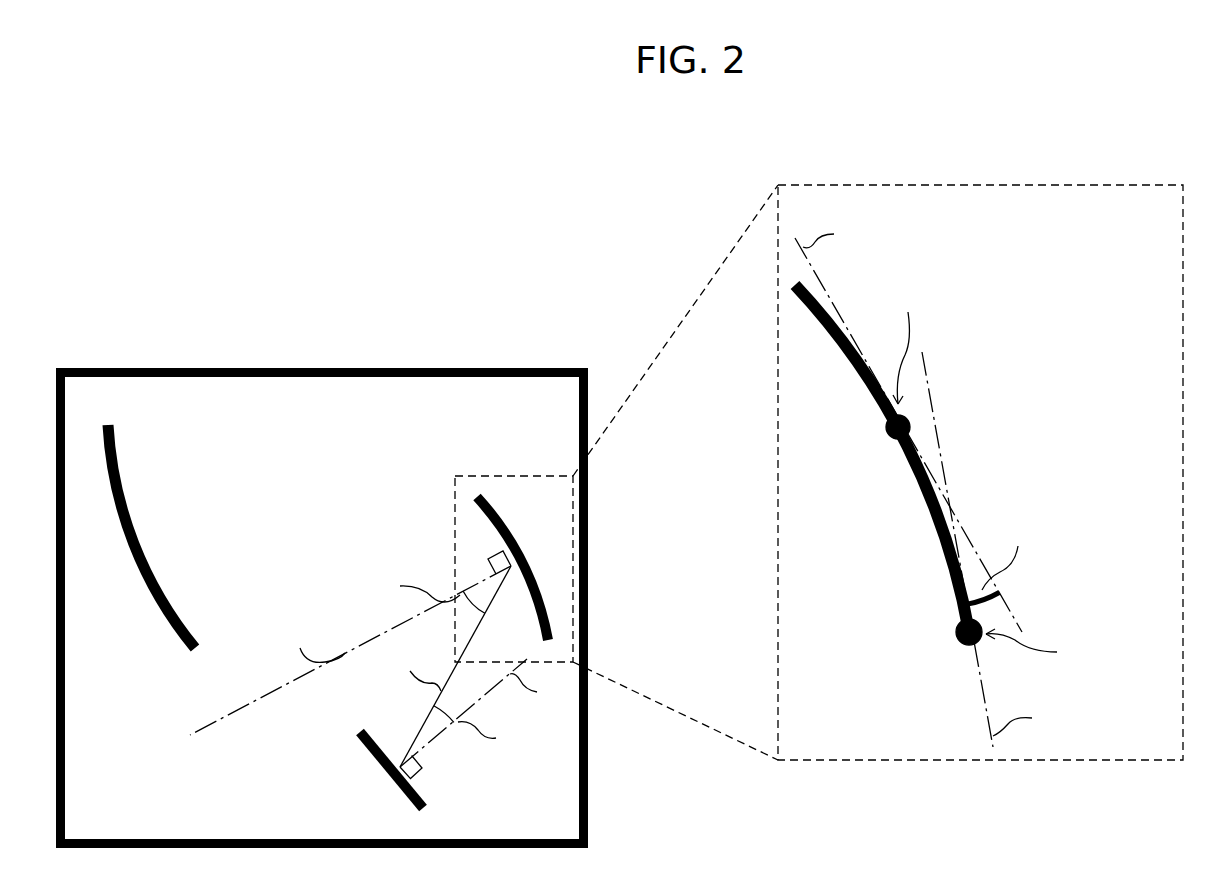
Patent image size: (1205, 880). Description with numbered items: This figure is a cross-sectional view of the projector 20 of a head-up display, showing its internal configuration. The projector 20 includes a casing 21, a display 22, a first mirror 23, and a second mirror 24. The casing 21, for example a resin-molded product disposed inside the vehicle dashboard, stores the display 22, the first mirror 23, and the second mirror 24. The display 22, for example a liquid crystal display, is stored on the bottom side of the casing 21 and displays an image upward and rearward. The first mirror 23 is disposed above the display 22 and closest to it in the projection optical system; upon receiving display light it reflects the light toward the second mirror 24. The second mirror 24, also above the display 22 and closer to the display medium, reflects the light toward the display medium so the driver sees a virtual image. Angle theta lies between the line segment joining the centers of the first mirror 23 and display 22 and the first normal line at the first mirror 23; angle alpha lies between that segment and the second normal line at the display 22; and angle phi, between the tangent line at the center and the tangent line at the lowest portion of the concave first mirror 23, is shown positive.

The projector 20 is at (558, 238).
The casing 21 is at (529, 368).
The display 22 is at (362, 744).
The first mirror 23 is at (492, 505).
The second mirror 24 is at (146, 572).